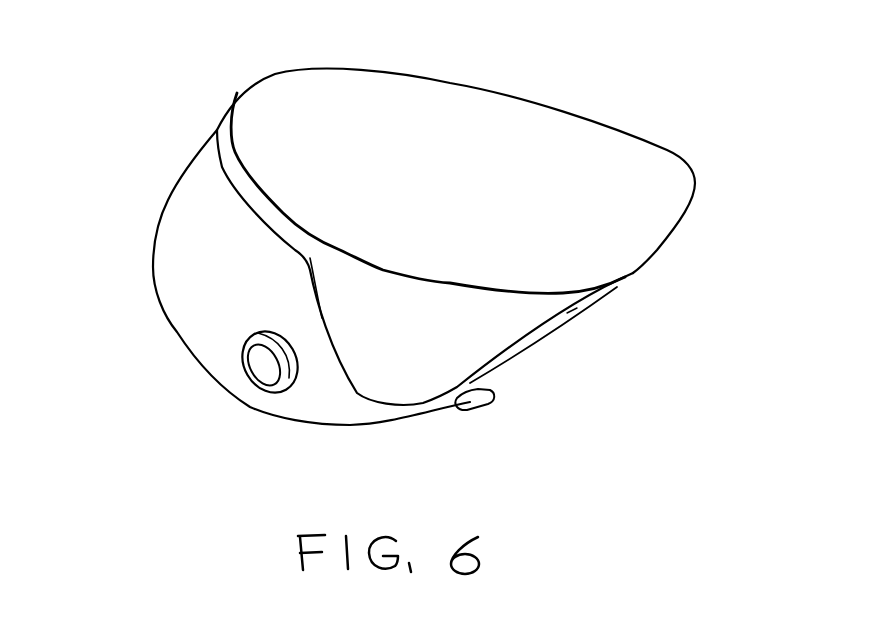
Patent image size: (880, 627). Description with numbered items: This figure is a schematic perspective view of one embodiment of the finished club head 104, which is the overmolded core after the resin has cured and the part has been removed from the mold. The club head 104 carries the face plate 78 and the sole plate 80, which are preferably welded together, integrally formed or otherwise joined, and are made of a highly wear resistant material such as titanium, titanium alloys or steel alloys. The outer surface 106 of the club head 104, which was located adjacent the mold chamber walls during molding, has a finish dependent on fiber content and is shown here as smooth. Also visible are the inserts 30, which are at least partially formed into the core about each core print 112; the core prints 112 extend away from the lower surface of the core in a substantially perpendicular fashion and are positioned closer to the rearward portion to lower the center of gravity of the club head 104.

The club head 104 is at (532, 68).
The face plate 78 is at (652, 163).
The sole plate 80 is at (510, 338).
The outer surface 106 is at (181, 218).
The insert 30 is at (258, 330).
The core print 112 is at (260, 366).